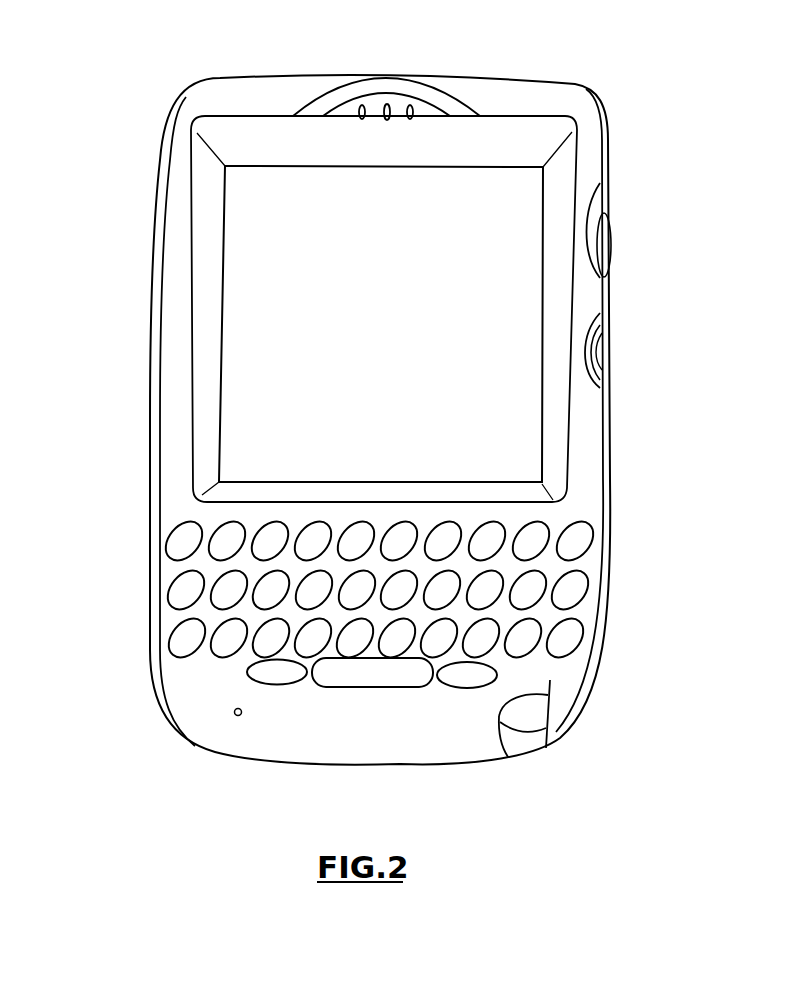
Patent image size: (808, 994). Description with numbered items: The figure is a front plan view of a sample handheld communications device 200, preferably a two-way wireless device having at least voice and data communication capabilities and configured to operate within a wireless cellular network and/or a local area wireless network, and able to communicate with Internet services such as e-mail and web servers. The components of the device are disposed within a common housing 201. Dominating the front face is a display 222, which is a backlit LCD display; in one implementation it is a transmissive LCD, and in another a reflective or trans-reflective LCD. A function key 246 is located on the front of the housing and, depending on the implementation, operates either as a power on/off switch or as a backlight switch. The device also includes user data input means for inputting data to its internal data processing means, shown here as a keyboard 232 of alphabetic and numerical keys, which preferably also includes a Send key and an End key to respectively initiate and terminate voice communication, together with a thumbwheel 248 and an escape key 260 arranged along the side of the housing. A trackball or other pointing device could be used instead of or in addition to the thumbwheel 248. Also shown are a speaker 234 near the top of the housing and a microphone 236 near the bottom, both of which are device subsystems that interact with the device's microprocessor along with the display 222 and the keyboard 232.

The handheld communications device 200 is at (138, 99).
The common housing 201 is at (266, 78).
The display 222 is at (545, 412).
The keyboard 232 is at (630, 517).
The speaker 234 is at (388, 121).
The microphone 236 is at (238, 715).
The function key 246 is at (508, 757).
The thumbwheel 248 is at (606, 237).
The escape key 260 is at (606, 335).